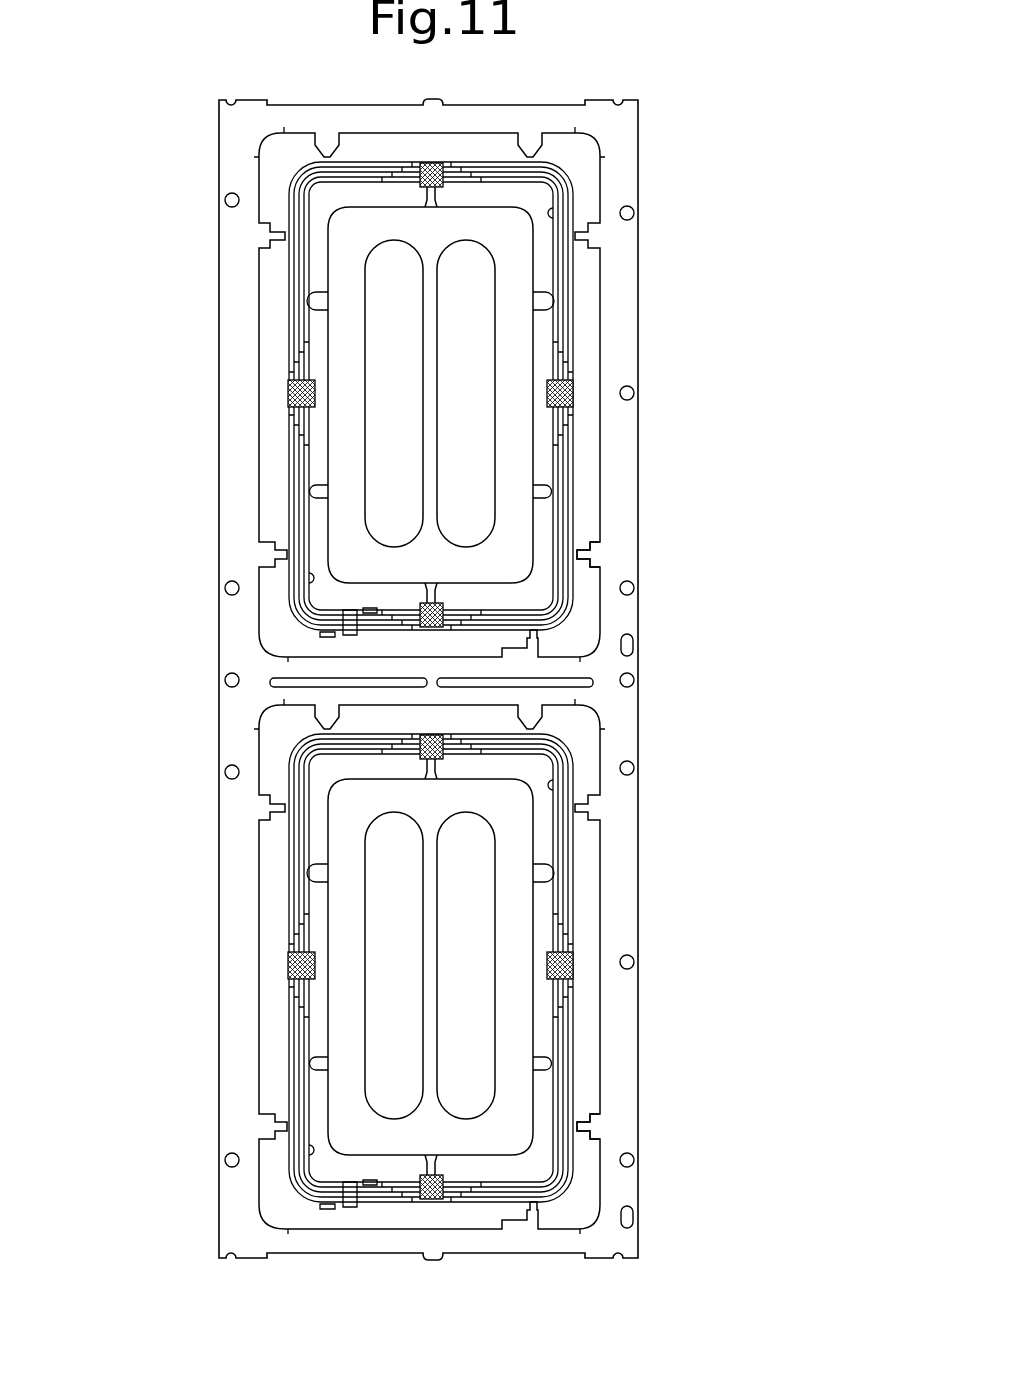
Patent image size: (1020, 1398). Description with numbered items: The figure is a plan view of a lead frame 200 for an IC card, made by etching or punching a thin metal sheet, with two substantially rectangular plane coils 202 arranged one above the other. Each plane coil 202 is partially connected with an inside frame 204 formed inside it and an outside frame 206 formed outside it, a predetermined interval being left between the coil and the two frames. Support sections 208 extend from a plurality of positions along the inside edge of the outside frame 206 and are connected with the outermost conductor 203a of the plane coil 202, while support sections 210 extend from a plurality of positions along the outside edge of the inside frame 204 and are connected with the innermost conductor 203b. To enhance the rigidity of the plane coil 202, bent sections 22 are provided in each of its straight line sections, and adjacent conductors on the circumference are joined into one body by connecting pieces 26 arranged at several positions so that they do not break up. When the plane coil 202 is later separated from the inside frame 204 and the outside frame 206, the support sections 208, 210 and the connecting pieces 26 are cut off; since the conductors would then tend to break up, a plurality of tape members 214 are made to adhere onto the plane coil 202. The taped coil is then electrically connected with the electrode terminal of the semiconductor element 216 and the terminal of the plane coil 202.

The lead frame 200 is at (491, 94).
The plane coil 202 is at (436, 678).
The outermost conductor 203a is at (288, 507).
The innermost conductor 203b is at (311, 583).
The inside frame 204 is at (433, 681).
The outside frame 206 is at (622, 323).
The support section 208 is at (591, 555).
The support section 210 is at (313, 309).
The tape member 214 is at (432, 163).
The semiconductor element 216 is at (345, 640).
The bent section 22 is at (573, 393).
The connecting piece 26 is at (436, 627).